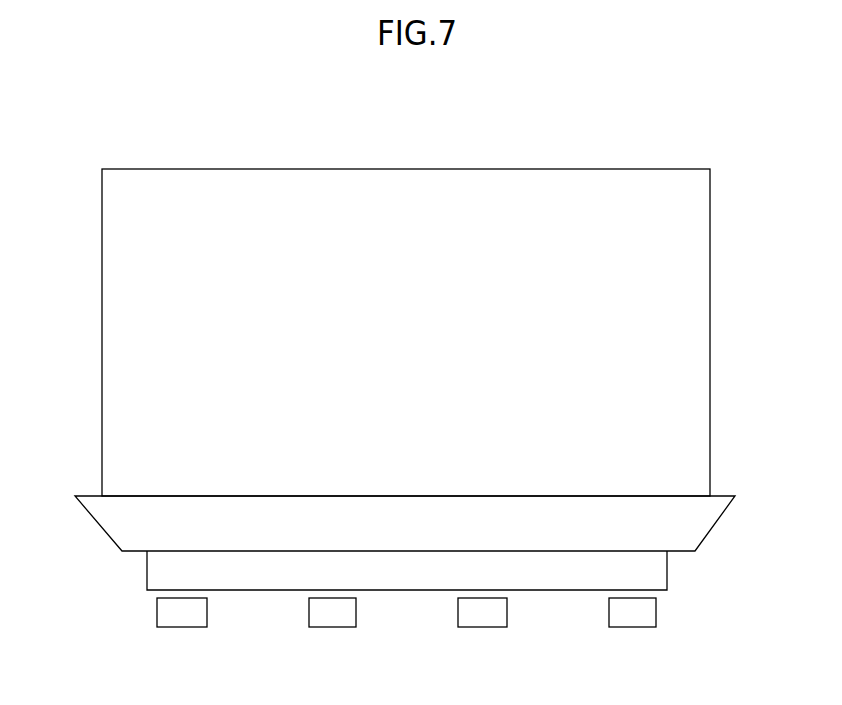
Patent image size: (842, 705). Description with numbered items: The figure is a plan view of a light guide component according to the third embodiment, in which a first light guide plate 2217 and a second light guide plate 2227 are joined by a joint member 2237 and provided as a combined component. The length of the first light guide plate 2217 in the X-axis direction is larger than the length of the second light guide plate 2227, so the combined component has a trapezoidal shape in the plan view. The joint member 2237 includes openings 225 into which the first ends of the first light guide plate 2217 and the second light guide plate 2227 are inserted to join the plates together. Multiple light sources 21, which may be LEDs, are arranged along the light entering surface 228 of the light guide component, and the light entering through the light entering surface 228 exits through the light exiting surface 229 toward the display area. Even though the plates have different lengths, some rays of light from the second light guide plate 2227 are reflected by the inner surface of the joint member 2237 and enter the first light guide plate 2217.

The light source 21 is at (630, 612).
The opening 225 is at (152, 494).
The light entering surface 228 is at (254, 591).
The light exiting surface 229 is at (495, 217).
The first light guide plate 2217 is at (640, 183).
The second light guide plate 2227 is at (667, 562).
The joint member 2237 is at (690, 520).